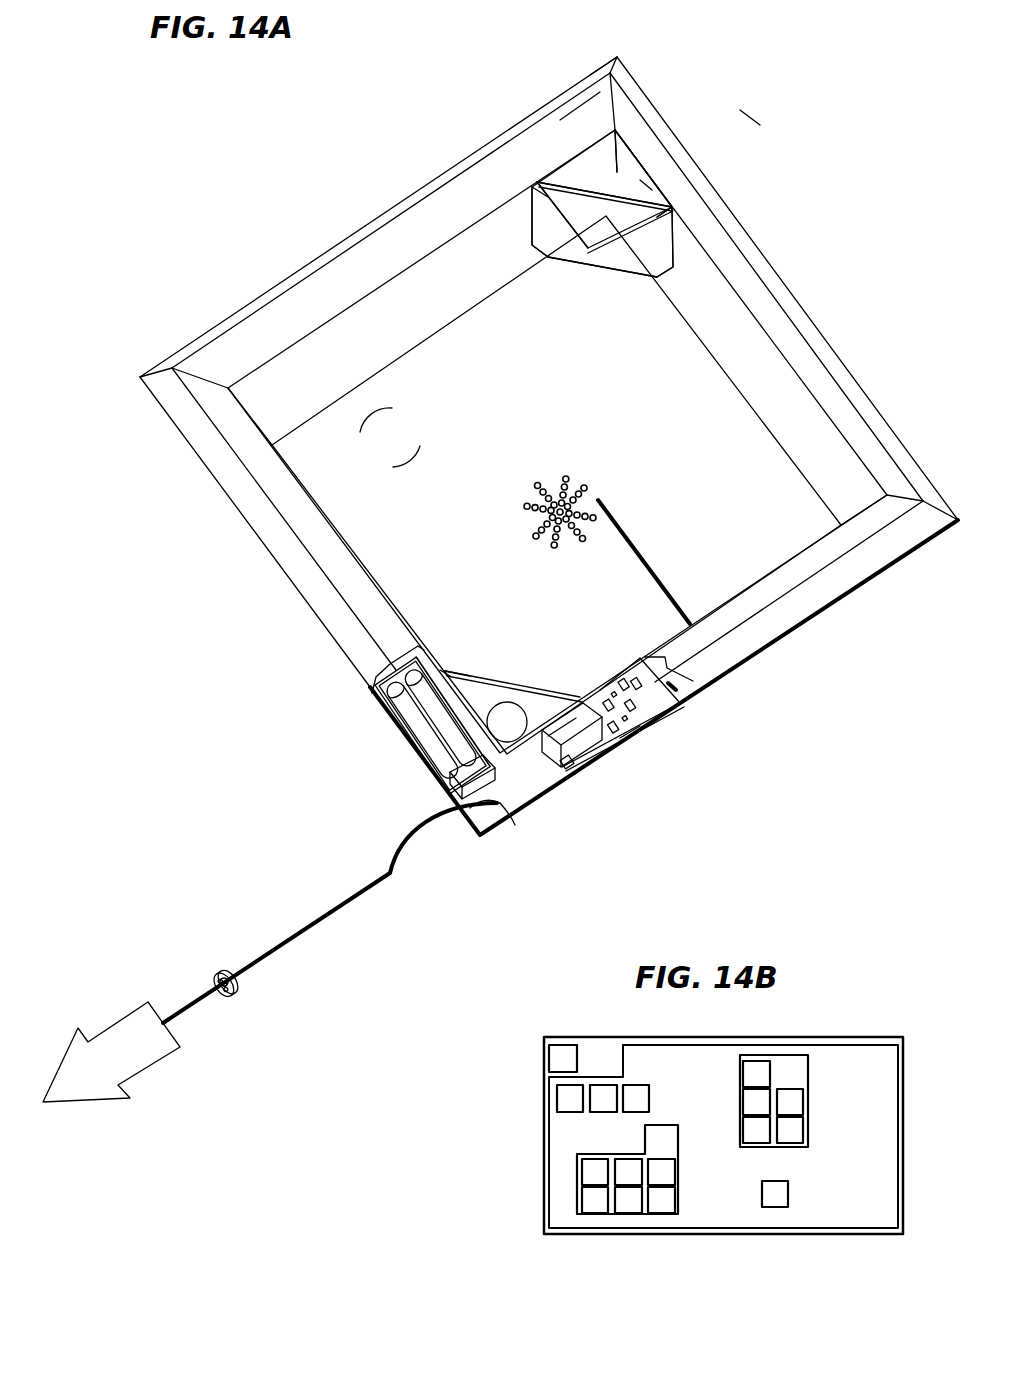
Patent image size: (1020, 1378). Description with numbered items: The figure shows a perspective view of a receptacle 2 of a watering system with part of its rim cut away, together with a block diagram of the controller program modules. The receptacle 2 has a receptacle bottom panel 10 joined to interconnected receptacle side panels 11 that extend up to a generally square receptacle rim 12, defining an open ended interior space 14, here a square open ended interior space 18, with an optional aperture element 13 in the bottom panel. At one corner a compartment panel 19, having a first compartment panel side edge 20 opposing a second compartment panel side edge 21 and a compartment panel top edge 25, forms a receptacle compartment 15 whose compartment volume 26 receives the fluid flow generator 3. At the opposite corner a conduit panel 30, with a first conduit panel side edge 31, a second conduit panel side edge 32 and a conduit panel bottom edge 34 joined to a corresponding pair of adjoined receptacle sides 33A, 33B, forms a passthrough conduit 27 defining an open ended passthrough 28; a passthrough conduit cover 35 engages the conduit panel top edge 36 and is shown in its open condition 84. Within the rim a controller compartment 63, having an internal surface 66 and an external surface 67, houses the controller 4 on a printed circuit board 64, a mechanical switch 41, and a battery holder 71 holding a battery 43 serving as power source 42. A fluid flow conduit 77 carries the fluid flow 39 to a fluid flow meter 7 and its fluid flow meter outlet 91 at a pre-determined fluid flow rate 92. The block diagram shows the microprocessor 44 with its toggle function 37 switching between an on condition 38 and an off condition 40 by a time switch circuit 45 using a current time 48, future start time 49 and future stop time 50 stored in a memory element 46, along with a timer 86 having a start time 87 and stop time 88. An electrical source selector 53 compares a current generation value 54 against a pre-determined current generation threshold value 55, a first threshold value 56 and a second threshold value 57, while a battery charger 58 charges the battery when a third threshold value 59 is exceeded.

In FIG. 14A, the receptacle 2 is at (736, 91).
In FIG. 14A, the fluid flow generator 3 is at (503, 728).
In FIG. 14A, the controller 4 is at (641, 753).
In FIG. 14A, the fluid flow meter 7 is at (243, 986).
In FIG. 14A, the receptacle bottom panel 10 is at (737, 437).
In FIG. 14A, the receptacle side panels 11 is at (388, 307).
In FIG. 14A, the receptacle rim 12 is at (585, 78).
In FIG. 14A, the aperture element 13 is at (555, 497).
In FIG. 14A, the open ended interior space 14 is at (390, 437).
In FIG. 14A, the square open ended interior space 18 is at (390, 437).
In FIG. 14A, the receptacle compartment 15 is at (463, 660).
In FIG. 14A, the compartment panel 19 is at (493, 697).
In FIG. 14A, the first compartment panel side edge 20 is at (447, 672).
In FIG. 14A, the second compartment panel side edge 21 is at (577, 697).
In FIG. 14A, the compartment panel top edge 25 is at (547, 690).
In FIG. 14A, the compartment volume 26 is at (470, 714).
In FIG. 14A, the passthrough conduit 27 is at (569, 135).
In FIG. 14A, the open ended passthrough 28 is at (650, 185).
In FIG. 14A, the conduit panel 30 is at (660, 244).
In FIG. 14A, the first conduit panel side edge 31 is at (545, 225).
In FIG. 14A, the second conduit panel side edge 32 is at (678, 250).
In FIG. 14A, the adjoined receptacle side 33A is at (563, 176).
In FIG. 14A, the adjoined receptacle side 33B is at (643, 186).
In FIG. 14A, the conduit panel bottom edge 34 is at (598, 268).
In FIG. 14A, the passthrough conduit cover 35 is at (625, 215).
In FIG. 14A, the conduit panel top edge 36 is at (640, 160).
In FIG. 14A, the fluid flow 39 is at (111, 1052).
In FIG. 14A, the fluid flow rate 92 is at (111, 1052).
In FIG. 14A, the mechanical switch 41 is at (585, 768).
In FIG. 14A, the power source 42 is at (390, 720).
In FIG. 14A, the battery 43 is at (382, 712).
In FIG. 14A, the microprocessor 44 is at (577, 741).
In FIG. 14B, the microprocessor 44 is at (563, 1059).
In FIG. 14B, the memory element 46 is at (895, 1075).
In FIG. 14B, the time switch circuit 45 is at (674, 1150).
In FIG. 14B, the toggle function 37 is at (570, 1098).
In FIG. 14B, the on condition 38 is at (603, 1098).
In FIG. 14B, the off condition 40 is at (636, 1098).
In FIG. 14B, the current time 48 is at (595, 1172).
In FIG. 14B, the future start time 49 is at (628, 1172).
In FIG. 14B, the future stop time 50 is at (595, 1200).
In FIG. 14B, the timer 86 is at (661, 1172).
In FIG. 14B, the start time 87 is at (628, 1200).
In FIG. 14B, the stop time 88 is at (661, 1200).
In FIG. 14B, the electrical source selector 53 is at (802, 1085).
In FIG. 14B, the current generation value 54 is at (756, 1074).
In FIG. 14B, the pre-determined current generation threshold value 55 is at (790, 1102).
In FIG. 14B, the first pre-determined current generation threshold value 56 is at (756, 1102).
In FIG. 14B, the second pre-determined current generation threshold value 57 is at (790, 1130).
In FIG. 14B, the battery charger 58 is at (775, 1194).
In FIG. 14B, the third pre-determined current generation threshold value 59 is at (756, 1130).
In FIG. 14A, the controller compartment 63 is at (518, 790).
In FIG. 14A, the printed circuit board 64 is at (618, 690).
In FIG. 14A, the internal surface 66 is at (480, 818).
In FIG. 14A, the external surface 67 is at (510, 818).
In FIG. 14A, the battery holder 71 is at (452, 790).
In FIG. 14A, the fluid flow conduit 77 is at (312, 920).
In FIG. 14A, the open condition 84 is at (603, 173).
In FIG. 14A, the fluid flow meter outlet 91 is at (222, 972).